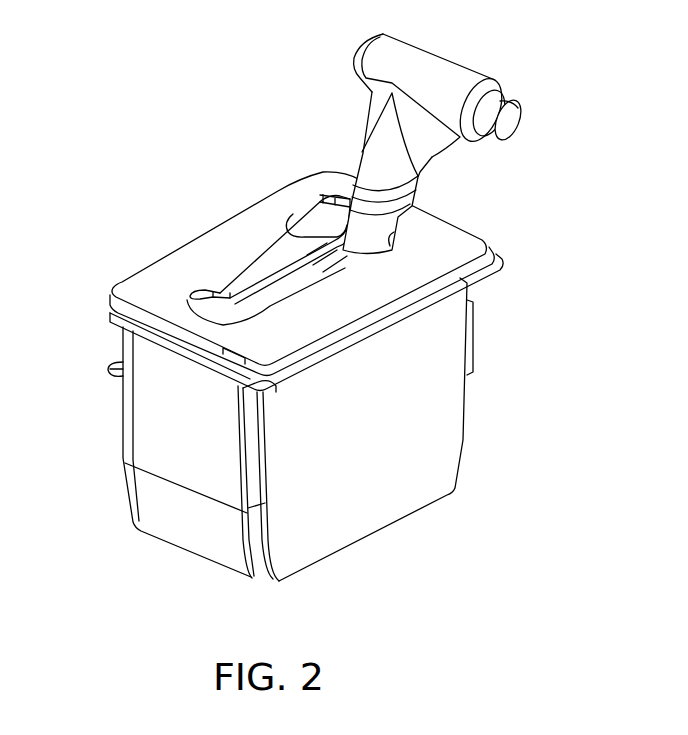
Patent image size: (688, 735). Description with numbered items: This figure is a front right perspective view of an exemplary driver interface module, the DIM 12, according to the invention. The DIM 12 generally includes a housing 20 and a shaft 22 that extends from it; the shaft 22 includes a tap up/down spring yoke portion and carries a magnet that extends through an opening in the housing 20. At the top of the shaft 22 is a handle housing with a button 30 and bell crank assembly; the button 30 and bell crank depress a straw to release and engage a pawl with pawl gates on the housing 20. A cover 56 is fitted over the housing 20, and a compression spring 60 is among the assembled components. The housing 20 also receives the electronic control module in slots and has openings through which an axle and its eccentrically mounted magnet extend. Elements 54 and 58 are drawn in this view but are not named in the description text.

The DIM 12 is at (171, 231).
The housing 20 is at (140, 448).
The shaft 22 is at (357, 229).
The button 30 is at (517, 118).
The shift slot 54 is at (298, 217).
The cover 56 is at (137, 287).
The front pillar 58 is at (253, 470).
The compression spring 60 is at (402, 495).